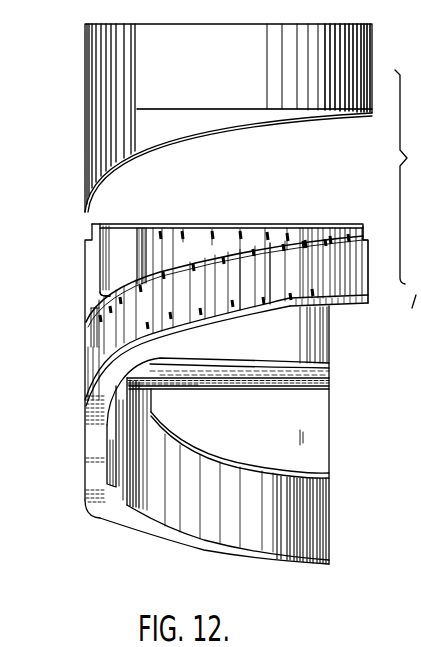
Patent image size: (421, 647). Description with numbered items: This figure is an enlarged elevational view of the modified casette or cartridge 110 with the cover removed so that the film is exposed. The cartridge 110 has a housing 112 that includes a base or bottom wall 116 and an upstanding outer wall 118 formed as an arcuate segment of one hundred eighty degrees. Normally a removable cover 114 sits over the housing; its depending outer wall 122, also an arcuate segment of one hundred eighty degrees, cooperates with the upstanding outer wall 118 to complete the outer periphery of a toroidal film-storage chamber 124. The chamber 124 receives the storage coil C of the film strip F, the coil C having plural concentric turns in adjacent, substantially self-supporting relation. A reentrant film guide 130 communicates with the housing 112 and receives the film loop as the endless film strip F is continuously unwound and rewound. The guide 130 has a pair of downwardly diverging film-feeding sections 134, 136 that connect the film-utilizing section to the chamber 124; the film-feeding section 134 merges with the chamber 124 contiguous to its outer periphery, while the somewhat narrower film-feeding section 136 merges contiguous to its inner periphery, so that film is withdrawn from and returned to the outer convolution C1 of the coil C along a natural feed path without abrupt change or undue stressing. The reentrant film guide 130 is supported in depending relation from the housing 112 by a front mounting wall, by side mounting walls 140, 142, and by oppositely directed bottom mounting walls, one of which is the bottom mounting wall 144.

The casette or cartridge 110 is at (358, 374).
The housing 112 is at (85, 257).
The removable cover 114 is at (264, 119).
The base or bottom wall 116 is at (104, 293).
The upstanding outer wall 118 is at (369, 267).
The depending outer wall 122 is at (102, 107).
The toroidal film-storage chamber 124 is at (117, 244).
The reentrant film guide 130 is at (248, 540).
The film-feeding section 134 is at (88, 450).
The film-feeding section 136 is at (137, 472).
The side mounting wall 140 is at (110, 421).
The side mounting wall 142 is at (315, 433).
The bottom mounting wall 144 is at (116, 510).
The storage coil C is at (205, 232).
The outer convolution C1 is at (276, 290).
The film strip F is at (250, 306).